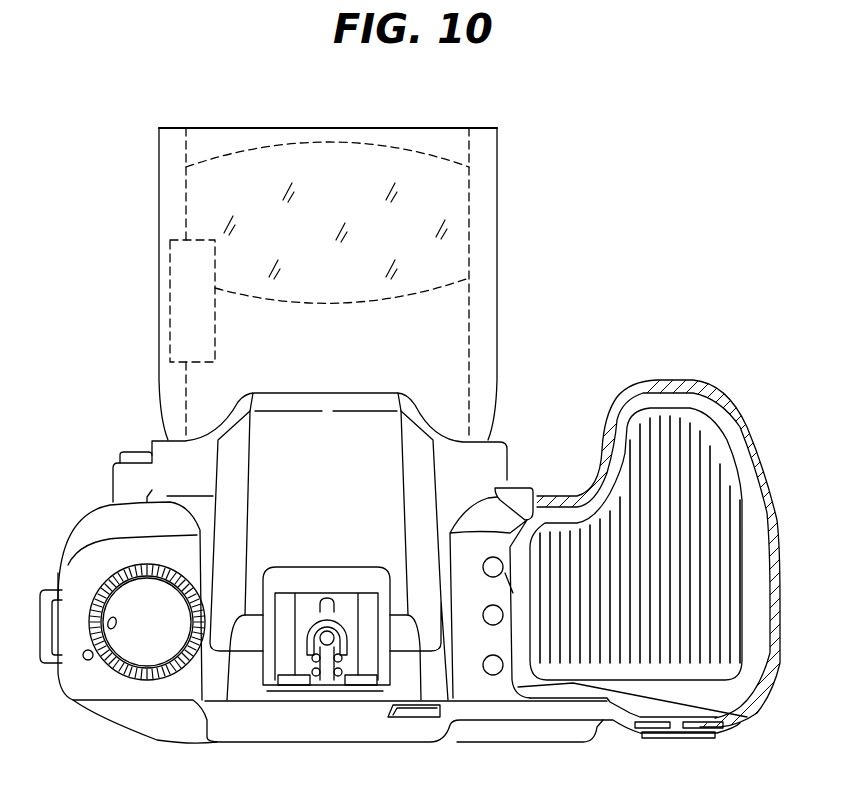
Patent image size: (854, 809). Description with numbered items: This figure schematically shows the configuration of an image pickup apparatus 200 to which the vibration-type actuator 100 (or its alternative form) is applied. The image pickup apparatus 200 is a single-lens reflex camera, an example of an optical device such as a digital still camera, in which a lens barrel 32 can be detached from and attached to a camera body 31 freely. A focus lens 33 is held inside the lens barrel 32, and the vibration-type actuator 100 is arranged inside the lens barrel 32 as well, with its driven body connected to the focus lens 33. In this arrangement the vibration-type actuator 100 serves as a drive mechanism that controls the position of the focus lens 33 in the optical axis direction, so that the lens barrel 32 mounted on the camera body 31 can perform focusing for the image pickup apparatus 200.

The image pickup apparatus 200 is at (633, 173).
The camera body 31 is at (97, 527).
The lens barrel 32 is at (168, 203).
The focus lens 33 is at (450, 250).
The vibration-type actuator 100 is at (185, 292).